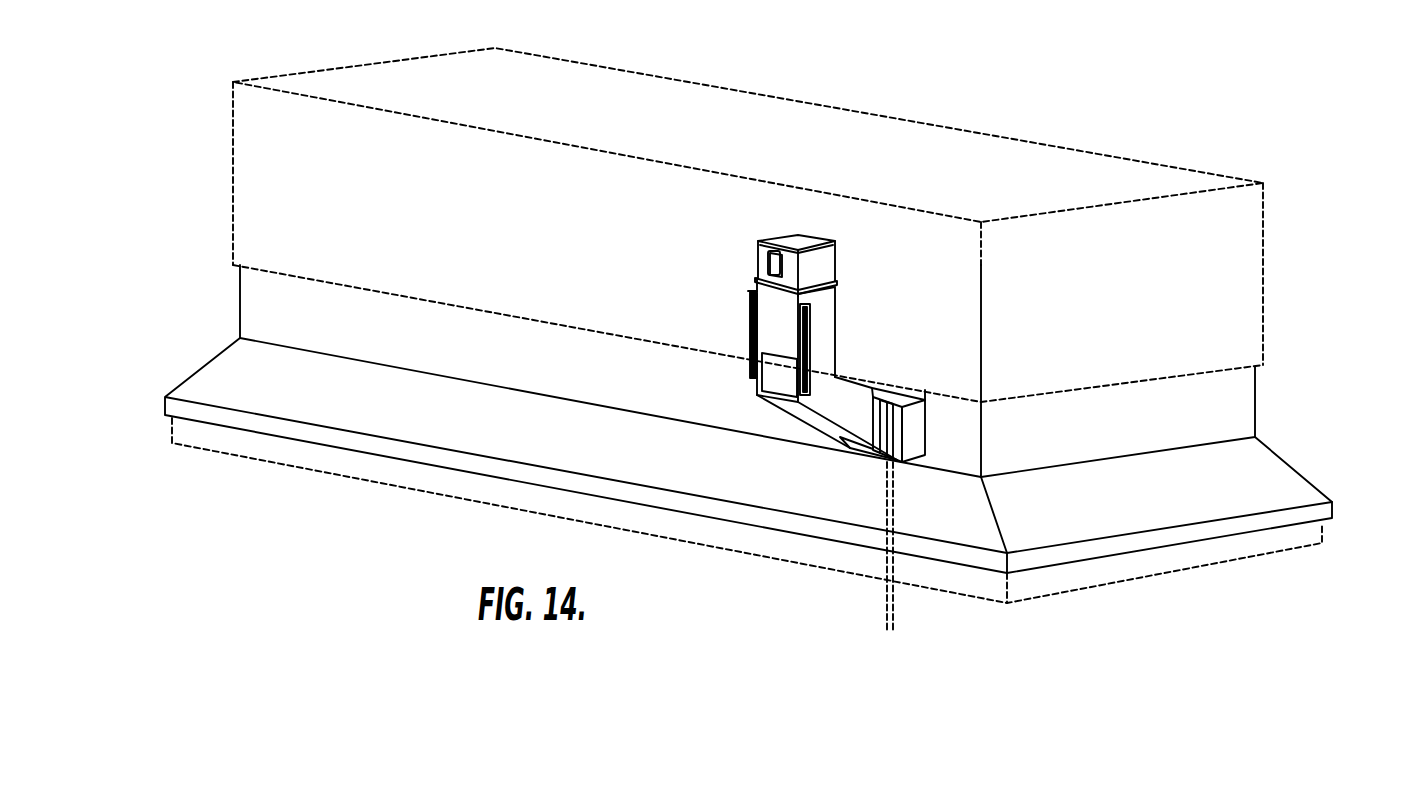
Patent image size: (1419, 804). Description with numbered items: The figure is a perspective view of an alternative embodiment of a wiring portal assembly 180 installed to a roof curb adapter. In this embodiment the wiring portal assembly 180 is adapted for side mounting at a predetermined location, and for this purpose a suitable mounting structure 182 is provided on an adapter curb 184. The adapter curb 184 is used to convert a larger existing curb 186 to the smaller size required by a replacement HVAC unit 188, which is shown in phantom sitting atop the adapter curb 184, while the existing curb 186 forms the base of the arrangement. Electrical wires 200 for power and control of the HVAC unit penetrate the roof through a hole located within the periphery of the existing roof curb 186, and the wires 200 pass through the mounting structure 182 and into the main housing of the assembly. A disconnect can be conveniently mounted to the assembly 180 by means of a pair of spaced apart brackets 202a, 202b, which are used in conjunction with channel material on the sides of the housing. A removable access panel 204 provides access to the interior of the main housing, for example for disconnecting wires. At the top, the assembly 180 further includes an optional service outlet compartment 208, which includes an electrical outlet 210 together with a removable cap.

The wiring portal assembly 180 is at (843, 313).
The mounting structure 182 is at (913, 428).
The adapter curb 184 is at (1235, 405).
The existing curb 186 is at (1323, 533).
The replacement HVAC unit 188 is at (1248, 287).
The electrical wires 200 is at (883, 603).
The bracket 202a is at (750, 332).
The bracket 202b is at (808, 368).
The removable access panel 204 is at (772, 378).
The service outlet compartment 208 is at (825, 258).
The electrical outlet 210 is at (767, 258).